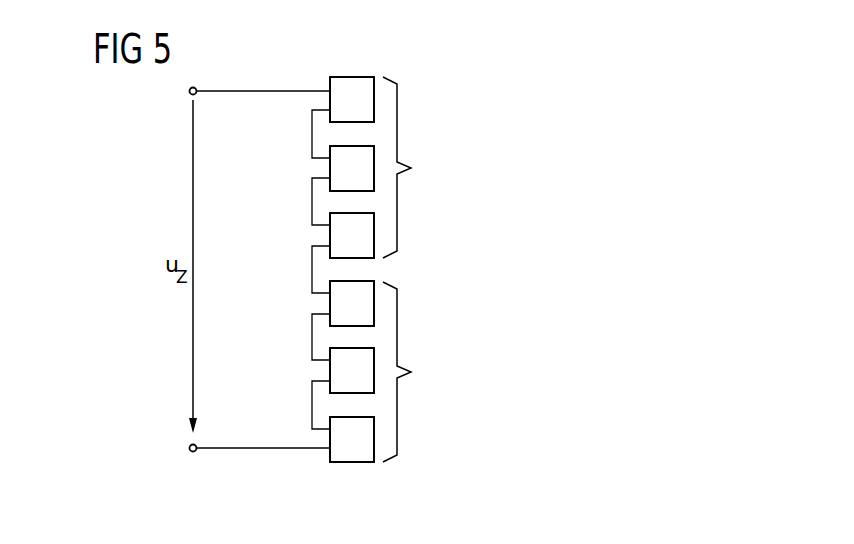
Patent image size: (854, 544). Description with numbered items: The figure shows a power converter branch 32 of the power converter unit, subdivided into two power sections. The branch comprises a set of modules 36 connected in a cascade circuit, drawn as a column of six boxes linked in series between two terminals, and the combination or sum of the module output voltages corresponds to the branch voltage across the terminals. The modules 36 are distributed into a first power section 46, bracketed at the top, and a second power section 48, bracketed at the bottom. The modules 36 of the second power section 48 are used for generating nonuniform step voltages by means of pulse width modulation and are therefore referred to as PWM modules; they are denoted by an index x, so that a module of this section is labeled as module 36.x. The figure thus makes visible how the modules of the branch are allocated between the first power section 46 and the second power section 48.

The power converter branch 32 is at (457, 99).
The module 36 is at (330, 84).
The module of the second power section 36.x is at (330, 372).
The first power section 46 is at (415, 167).
The second power section 48 is at (415, 372).